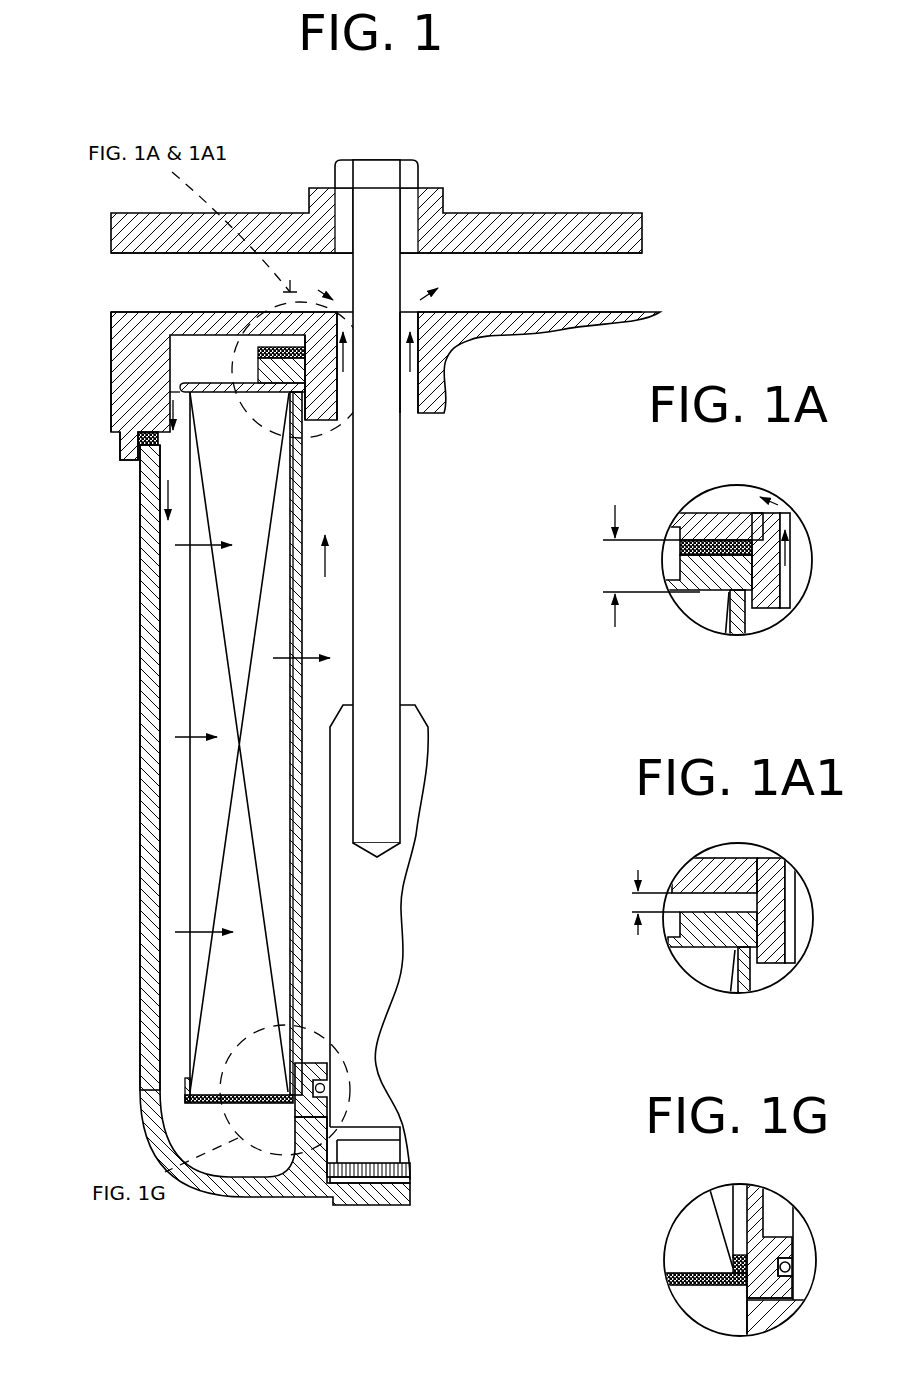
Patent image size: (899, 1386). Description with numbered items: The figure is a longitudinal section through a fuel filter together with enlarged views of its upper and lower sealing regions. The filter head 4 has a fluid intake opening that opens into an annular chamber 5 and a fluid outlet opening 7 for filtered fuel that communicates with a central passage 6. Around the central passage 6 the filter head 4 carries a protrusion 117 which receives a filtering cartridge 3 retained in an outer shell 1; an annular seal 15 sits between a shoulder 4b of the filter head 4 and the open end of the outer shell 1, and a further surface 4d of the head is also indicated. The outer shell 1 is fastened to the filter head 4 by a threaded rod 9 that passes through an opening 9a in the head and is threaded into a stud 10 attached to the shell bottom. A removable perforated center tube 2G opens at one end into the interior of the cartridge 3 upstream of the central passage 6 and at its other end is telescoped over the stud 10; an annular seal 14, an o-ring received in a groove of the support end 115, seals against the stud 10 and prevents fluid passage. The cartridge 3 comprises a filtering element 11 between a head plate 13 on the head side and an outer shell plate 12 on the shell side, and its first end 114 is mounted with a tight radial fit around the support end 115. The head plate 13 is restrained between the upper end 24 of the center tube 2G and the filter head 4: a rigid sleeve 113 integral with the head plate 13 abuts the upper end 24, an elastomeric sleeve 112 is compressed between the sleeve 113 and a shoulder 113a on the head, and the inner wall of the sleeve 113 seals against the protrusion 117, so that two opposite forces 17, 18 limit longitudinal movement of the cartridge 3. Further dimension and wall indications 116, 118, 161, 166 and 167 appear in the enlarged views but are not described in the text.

In FIG. 1, the outer shell 1 is at (141, 877).
In FIG. 1G, the outer shell 1 is at (762, 1318).
In FIG. 1, the removable perforated center tube 2G is at (330, 1118).
In FIG. 1G, the removable perforated center tube 2G is at (793, 1290).
In FIG. 1, the filtering cartridge 3 is at (200, 664).
In FIG. 1, the filter head 4 is at (576, 234).
In FIG. 1, the shoulder 4b is at (118, 444).
In FIG. 1, the flange side face 4d is at (112, 348).
In FIG. 1, the annular chamber 5 is at (178, 342).
In FIG. 1, the central passage 6 is at (425, 306).
In FIG. 1, the fluid outlet opening 7 is at (632, 284).
In FIG. 1, the threaded rod 9 is at (388, 212).
In FIG. 1, the opening 9a is at (367, 215).
In FIG. 1, the stud 10 is at (423, 718).
In FIG. 1G, the stud 10 is at (800, 1227).
In FIG. 1G, the filtering element 11 is at (673, 1238).
In FIG. 1G, the outer shell plate 12 is at (685, 1285).
In FIG. 1, the head plate 13 is at (206, 395).
In FIG. 1, the annular seal 14 is at (312, 1107).
In FIG. 1G, the annular seal 14 is at (794, 1267).
In FIG. 1, the annular seal 15 is at (143, 440).
In FIG. 1A, the force 17 is at (613, 515).
In FIG. 1A, the force 18 is at (613, 619).
In FIG. 1, the upper end of center tube 24 is at (303, 342).
In FIG. 1, the elastomeric sleeve 112 is at (282, 352).
In FIG. 1A, the elastomeric sleeve 112 is at (710, 543).
In FIG. 1, the rigid sleeve 113 is at (283, 370).
In FIG. 1A, the shoulder 113a is at (787, 521).
In FIG. 1, the first end of cartridge 114 is at (292, 1073).
In FIG. 1G, the first end of cartridge 114 is at (697, 1252).
In FIG. 1, the support end 115 is at (316, 1086).
In FIG. 1G, the support end 115 is at (794, 1248).
In FIG. 1, the casing side wall 116 is at (222, 465).
In FIG. 1A, the casing side wall 116 is at (703, 617).
In FIG. 1A1, the casing side wall 116 is at (700, 968).
In FIG. 1A, the protrusion 117 is at (774, 585).
In FIG. 1A1, the protrusion 117 is at (778, 928).
In FIG. 1A1, the clearance dimension 118 is at (635, 876).
In FIG. 1, the recess corner 161 is at (178, 400).
In FIG. 1, the upward flow passage 166 is at (337, 302).
In FIG. 1A, the upward flow passage 166 is at (795, 556).
In FIG. 1, the flow direction 167 is at (337, 292).
In FIG. 1A, the flow direction 167 is at (772, 515).